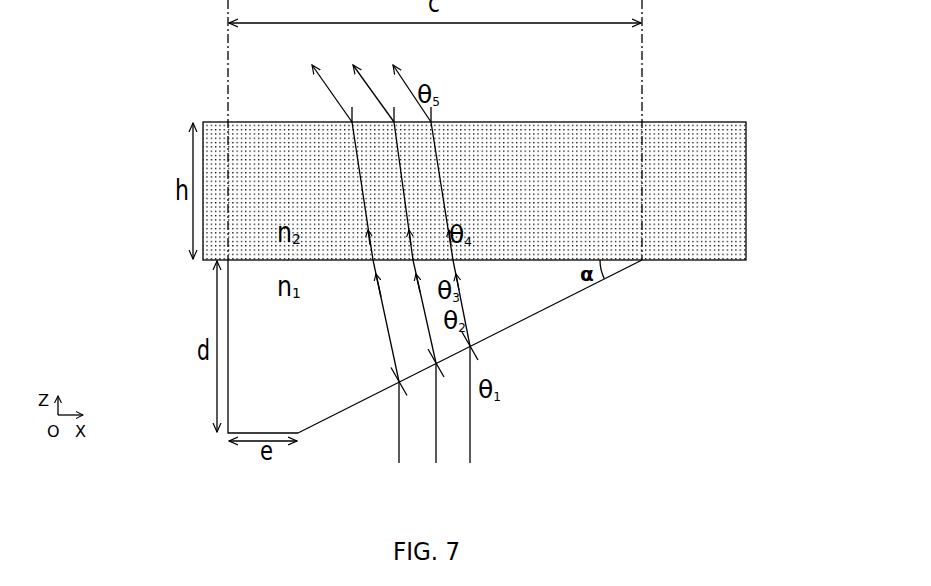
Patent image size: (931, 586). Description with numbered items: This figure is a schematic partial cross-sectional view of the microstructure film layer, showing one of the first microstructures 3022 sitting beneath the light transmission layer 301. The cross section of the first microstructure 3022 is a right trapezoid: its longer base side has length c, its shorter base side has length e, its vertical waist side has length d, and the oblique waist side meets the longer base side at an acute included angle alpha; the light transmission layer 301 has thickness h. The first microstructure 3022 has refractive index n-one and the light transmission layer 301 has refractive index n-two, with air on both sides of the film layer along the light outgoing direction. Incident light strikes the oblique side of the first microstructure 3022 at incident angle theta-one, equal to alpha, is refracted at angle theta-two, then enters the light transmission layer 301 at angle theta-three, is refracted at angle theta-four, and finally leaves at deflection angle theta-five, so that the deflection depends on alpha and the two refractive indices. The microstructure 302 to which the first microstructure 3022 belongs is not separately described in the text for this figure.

The light transmission layer 301 is at (722, 190).
The microstructure 302 is at (263, 346).
The first microstructure 3022 is at (507, 318).